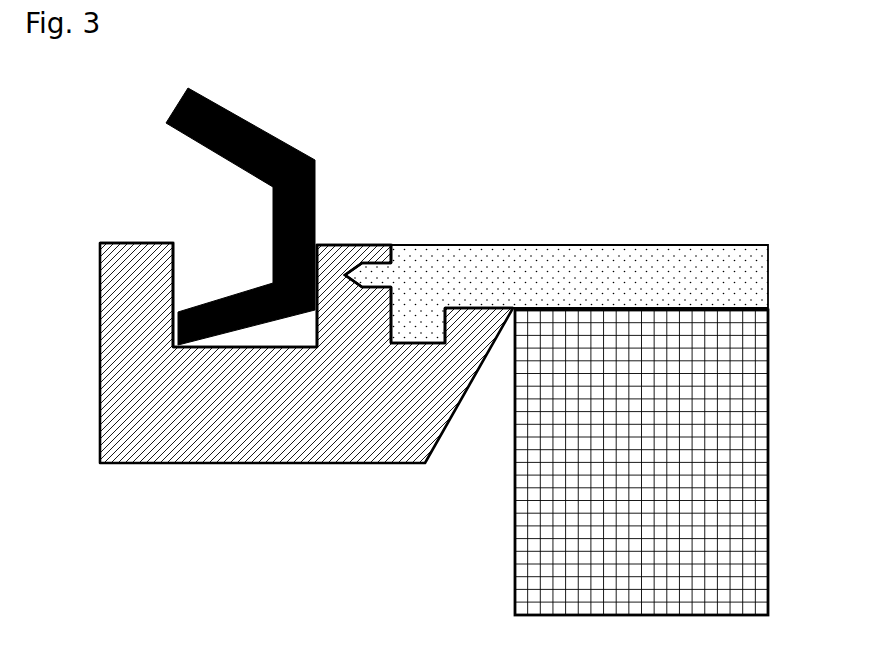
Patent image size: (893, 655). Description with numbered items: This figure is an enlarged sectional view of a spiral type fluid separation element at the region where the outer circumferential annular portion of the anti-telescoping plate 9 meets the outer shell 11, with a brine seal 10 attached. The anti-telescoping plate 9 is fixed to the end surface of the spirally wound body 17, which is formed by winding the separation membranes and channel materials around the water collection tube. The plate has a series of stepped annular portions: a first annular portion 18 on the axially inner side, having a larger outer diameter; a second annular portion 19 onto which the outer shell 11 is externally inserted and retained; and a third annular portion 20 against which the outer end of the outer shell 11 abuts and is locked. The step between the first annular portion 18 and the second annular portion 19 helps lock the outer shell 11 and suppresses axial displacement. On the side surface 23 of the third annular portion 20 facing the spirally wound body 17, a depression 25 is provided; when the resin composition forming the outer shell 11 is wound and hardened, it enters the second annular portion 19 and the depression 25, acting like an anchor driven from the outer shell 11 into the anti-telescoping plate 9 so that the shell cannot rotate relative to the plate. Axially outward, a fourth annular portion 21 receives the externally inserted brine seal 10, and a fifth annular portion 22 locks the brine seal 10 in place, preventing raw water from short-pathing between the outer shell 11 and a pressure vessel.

The anti-telescoping plate 9 is at (275, 436).
The brine seal 10 is at (295, 150).
The outer shell 11 is at (605, 244).
The spirally wound body 17 is at (512, 490).
The first annular portion 18 is at (497, 308).
The second annular portion 19 is at (423, 342).
The third annular portion 20 is at (355, 250).
The fourth annular portion 21 is at (245, 344).
The fifth annular portion 22 is at (148, 252).
The side surface 23 is at (392, 315).
The depression 25 is at (382, 273).